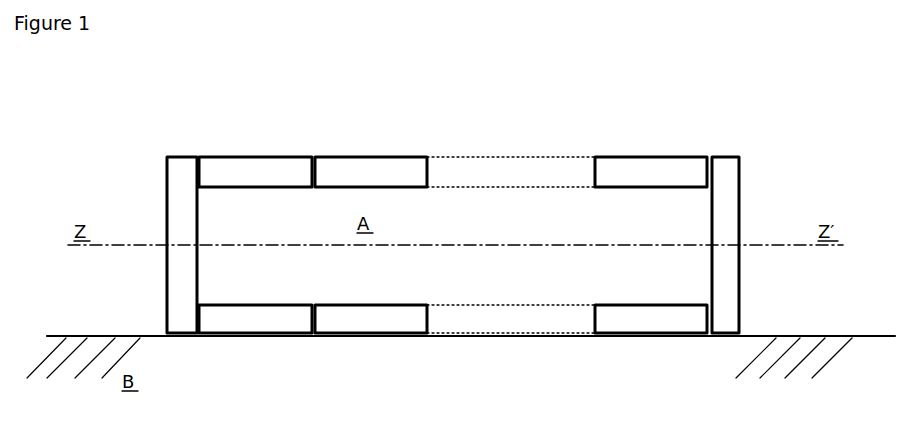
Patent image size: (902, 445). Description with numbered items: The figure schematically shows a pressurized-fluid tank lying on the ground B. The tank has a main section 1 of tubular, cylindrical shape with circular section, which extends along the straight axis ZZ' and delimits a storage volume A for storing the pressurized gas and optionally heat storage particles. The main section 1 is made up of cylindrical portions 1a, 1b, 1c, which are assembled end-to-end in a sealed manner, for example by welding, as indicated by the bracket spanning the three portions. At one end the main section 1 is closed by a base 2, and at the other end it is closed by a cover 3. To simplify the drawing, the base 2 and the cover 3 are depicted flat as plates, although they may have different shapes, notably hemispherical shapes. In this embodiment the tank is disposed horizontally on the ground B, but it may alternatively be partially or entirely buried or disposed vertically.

The main section 1 is at (707, 140).
The cylindrical portion 1a is at (226, 323).
The cylindrical portion 1b is at (378, 323).
The cylindrical portion 1c is at (656, 323).
The base 2 is at (177, 318).
The cover 3 is at (735, 173).